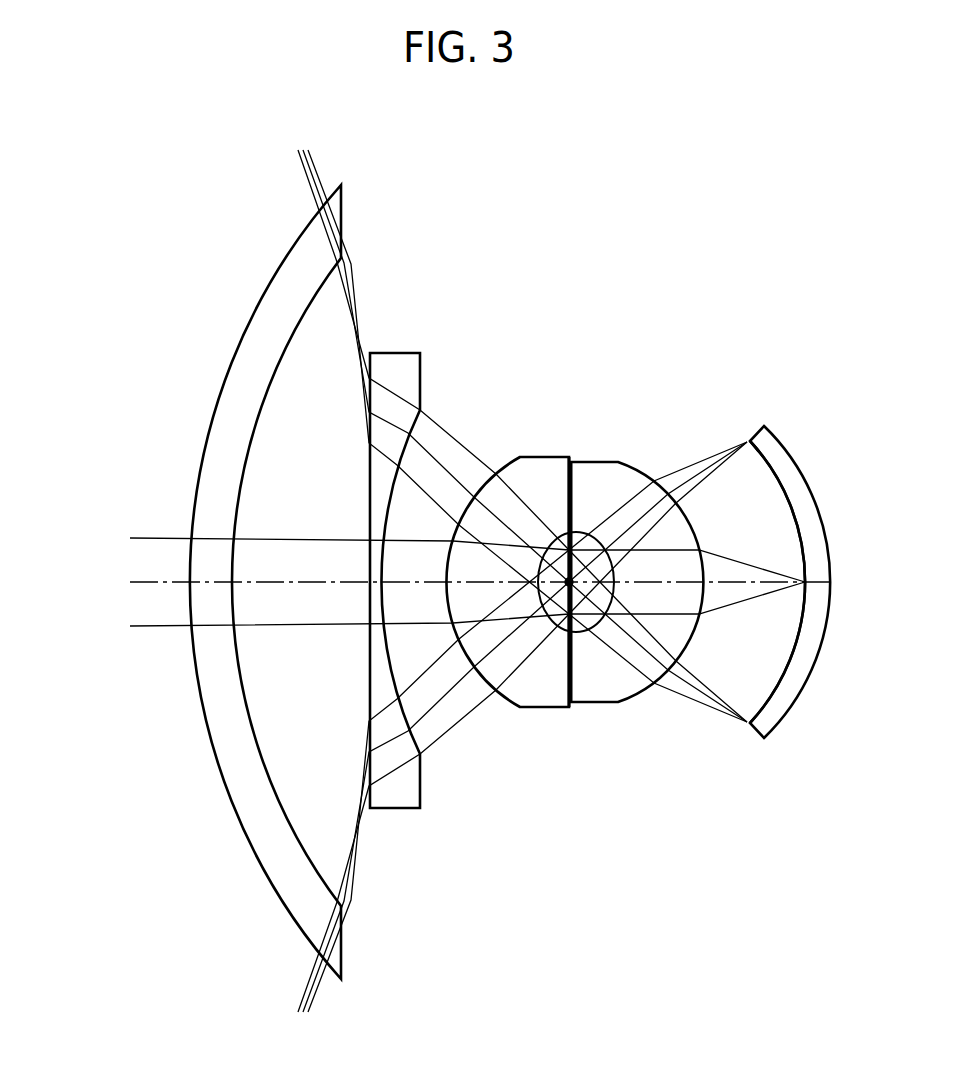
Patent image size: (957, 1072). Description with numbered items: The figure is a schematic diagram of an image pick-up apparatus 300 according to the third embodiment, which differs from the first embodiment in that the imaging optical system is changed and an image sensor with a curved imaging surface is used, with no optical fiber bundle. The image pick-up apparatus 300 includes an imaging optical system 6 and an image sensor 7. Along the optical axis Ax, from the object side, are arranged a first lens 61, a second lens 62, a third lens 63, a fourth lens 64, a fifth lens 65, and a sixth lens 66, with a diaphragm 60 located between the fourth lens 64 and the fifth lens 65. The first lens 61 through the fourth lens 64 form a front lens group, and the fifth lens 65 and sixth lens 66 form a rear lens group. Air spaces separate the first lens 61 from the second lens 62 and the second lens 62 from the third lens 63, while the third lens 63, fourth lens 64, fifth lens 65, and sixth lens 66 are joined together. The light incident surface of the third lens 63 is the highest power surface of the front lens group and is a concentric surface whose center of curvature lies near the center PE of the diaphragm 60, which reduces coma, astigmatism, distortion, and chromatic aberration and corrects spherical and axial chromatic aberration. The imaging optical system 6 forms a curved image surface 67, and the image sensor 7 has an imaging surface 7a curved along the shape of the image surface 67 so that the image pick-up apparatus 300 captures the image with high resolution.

The image pick-up apparatus 300 is at (230, 204).
The imaging optical system 6 is at (715, 181).
The first lens 61 is at (333, 218).
The second lens 62 is at (399, 363).
The third lens 63 is at (530, 475).
The fourth lens 64 is at (563, 540).
The diaphragm 60 is at (570, 532).
The fifth lens 65 is at (588, 537).
The sixth lens 66 is at (632, 483).
The image surface 67 is at (766, 458).
The image sensor 7 is at (797, 465).
The imaging surface 7a is at (777, 479).
The optical axis Ax is at (132, 580).
The center of the diaphragm PE is at (572, 584).